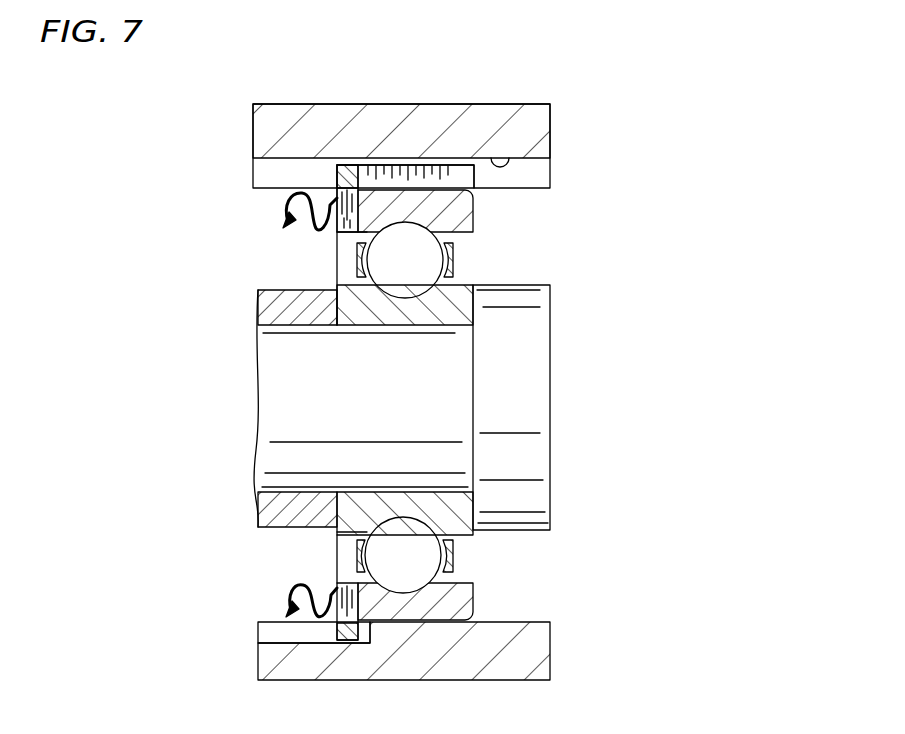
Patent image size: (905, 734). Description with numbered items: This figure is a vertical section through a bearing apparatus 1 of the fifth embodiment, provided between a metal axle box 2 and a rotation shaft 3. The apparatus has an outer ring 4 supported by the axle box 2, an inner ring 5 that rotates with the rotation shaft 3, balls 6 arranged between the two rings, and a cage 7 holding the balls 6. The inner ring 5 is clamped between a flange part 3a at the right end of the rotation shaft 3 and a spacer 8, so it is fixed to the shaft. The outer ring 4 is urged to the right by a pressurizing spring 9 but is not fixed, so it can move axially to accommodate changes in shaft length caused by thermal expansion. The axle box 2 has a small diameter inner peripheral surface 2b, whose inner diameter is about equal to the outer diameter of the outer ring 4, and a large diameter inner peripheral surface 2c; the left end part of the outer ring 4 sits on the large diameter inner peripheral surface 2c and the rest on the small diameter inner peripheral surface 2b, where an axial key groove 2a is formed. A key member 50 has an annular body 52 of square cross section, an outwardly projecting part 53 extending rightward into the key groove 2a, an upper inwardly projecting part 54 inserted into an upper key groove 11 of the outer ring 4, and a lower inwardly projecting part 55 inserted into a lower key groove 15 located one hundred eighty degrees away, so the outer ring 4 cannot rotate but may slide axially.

The bearing apparatus 1 is at (500, 228).
The axle box 2 is at (552, 127).
The key groove 2a is at (488, 158).
The small diameter inner peripheral surface 2b is at (510, 622).
The large diameter inner peripheral surface 2c is at (267, 640).
The rotation shaft 3 is at (550, 407).
The flange part 3a is at (543, 323).
The outer ring 4 is at (477, 202).
The inner ring 5 is at (455, 318).
The balls 6 is at (422, 252).
The cage 7 is at (453, 268).
The spacer 8 is at (268, 312).
The pressurizing spring 9 is at (283, 200).
The upper key groove 11 is at (340, 165).
The lower key groove 15 is at (343, 640).
The key member 50 is at (333, 175).
The annular body 52 is at (346, 178).
The outwardly projecting part 53 is at (422, 173).
The upper inwardly projecting part 54 is at (333, 245).
The lower inwardly projecting part 55 is at (337, 587).